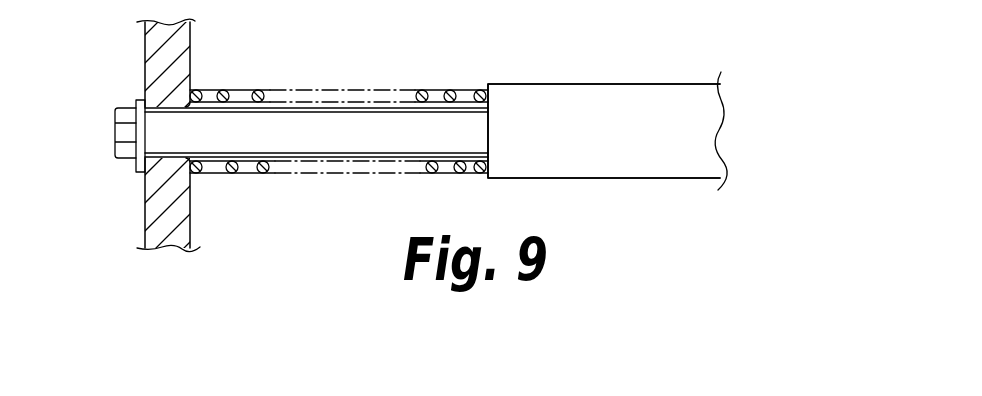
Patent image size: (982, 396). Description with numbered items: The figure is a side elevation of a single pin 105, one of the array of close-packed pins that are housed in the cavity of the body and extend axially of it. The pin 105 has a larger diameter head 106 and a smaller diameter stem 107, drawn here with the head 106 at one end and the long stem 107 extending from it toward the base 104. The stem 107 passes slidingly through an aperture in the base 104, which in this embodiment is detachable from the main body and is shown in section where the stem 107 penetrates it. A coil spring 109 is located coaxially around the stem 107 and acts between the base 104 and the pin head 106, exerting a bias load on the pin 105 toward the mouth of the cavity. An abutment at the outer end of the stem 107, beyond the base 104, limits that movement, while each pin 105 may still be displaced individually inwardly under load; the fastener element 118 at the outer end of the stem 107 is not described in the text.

The base 104 is at (190, 222).
The pin 105 is at (490, 77).
The head 106 is at (615, 143).
The stem 107 is at (327, 122).
The coil spring 109 is at (428, 171).
The bolt 118 is at (123, 112).